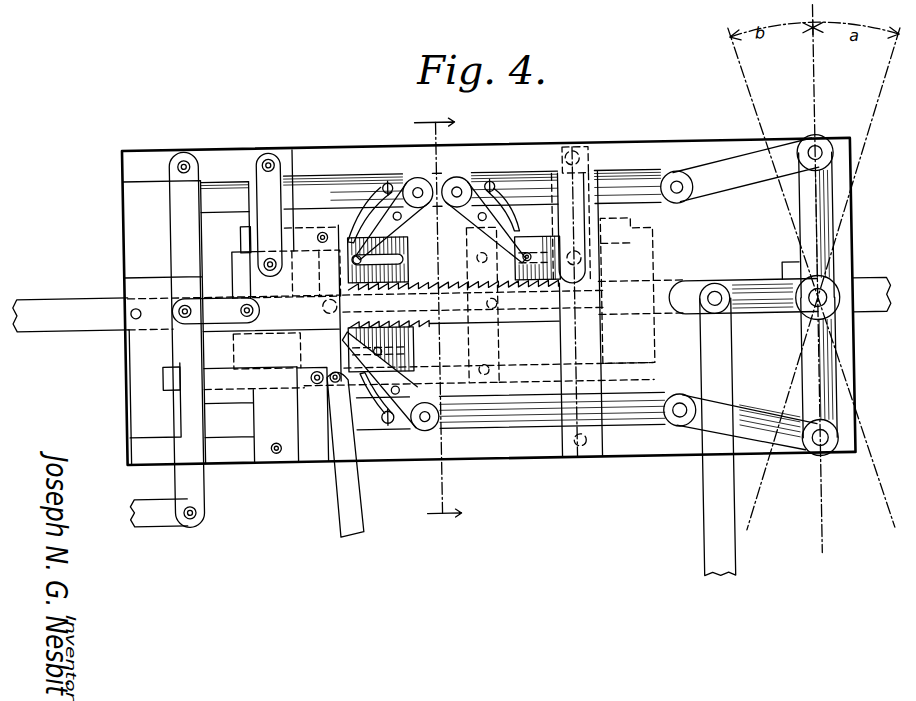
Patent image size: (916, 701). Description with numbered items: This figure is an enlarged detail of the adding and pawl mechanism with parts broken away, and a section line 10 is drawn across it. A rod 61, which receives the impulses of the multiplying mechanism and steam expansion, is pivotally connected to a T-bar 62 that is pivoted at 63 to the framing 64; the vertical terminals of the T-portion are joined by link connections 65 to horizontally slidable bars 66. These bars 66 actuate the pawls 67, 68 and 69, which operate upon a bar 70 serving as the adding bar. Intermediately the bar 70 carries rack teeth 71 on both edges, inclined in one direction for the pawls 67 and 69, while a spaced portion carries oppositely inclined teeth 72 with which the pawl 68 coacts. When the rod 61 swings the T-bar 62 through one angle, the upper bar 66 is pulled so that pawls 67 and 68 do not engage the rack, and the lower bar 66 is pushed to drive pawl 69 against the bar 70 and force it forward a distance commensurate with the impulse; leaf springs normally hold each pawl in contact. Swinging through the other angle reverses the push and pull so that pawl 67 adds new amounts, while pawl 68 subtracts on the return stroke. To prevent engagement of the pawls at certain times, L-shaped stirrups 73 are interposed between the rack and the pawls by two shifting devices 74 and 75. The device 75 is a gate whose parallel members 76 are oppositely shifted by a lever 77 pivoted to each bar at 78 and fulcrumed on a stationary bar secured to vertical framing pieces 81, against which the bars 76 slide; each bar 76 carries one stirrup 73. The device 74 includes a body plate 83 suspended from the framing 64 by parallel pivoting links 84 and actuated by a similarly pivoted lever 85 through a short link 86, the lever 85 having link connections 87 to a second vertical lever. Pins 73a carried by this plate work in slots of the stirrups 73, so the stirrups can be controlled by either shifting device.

The bar / section line 10 is at (72, 322).
The rod 61 is at (704, 494).
The T-bar 62 is at (742, 291).
The pivot 63 is at (792, 330).
The framing 64 is at (746, 151).
The link connections 65 is at (765, 150).
The horizontally slidable bars 66 is at (347, 176).
The pawl 67 is at (402, 175).
The pawl 68 is at (468, 180).
The pawl 69 is at (407, 428).
The adding bar 70 is at (271, 359).
The rack teeth 71 is at (420, 331).
The oppositely inclined teeth 72 is at (580, 280).
The stirrups 73 is at (407, 275).
The pins 73a is at (328, 229).
The shifting device 74 is at (259, 360).
The shifting device 75 is at (317, 176).
The parallel members 76 is at (243, 245).
The lever 77 is at (333, 524).
The pivot 78 is at (316, 241).
The vertical framing pieces 81 is at (289, 414).
The body plate 83 is at (286, 282).
The parallel pivoting links 84 is at (242, 172).
The lever 85 is at (187, 493).
The short link 86 is at (224, 321).
The link connections 87 is at (131, 500).